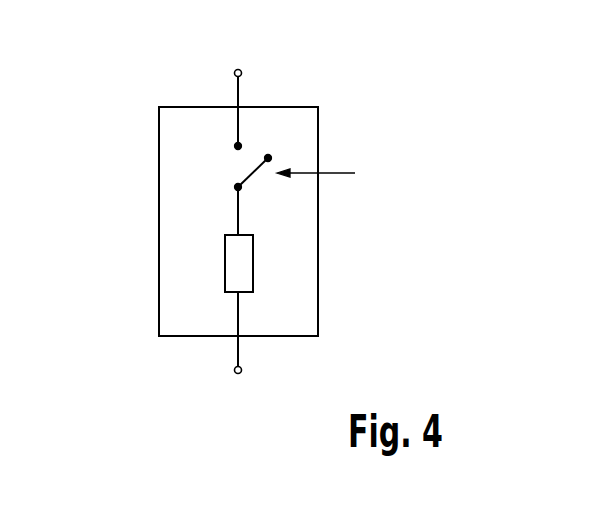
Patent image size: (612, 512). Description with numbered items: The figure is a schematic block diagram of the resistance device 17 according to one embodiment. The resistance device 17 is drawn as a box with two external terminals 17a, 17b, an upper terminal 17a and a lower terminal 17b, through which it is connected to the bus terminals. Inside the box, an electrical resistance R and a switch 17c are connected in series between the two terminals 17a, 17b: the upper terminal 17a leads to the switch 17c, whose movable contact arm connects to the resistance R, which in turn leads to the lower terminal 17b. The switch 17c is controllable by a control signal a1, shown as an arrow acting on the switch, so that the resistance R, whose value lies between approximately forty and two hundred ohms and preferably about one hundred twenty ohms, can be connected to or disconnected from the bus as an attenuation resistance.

The resistance device 17 is at (140, 175).
The terminal 17a is at (242, 73).
The terminal 17b is at (242, 370).
The switch 17c is at (233, 167).
The electrical resistance R is at (253, 262).
The control signal a1 is at (316, 161).